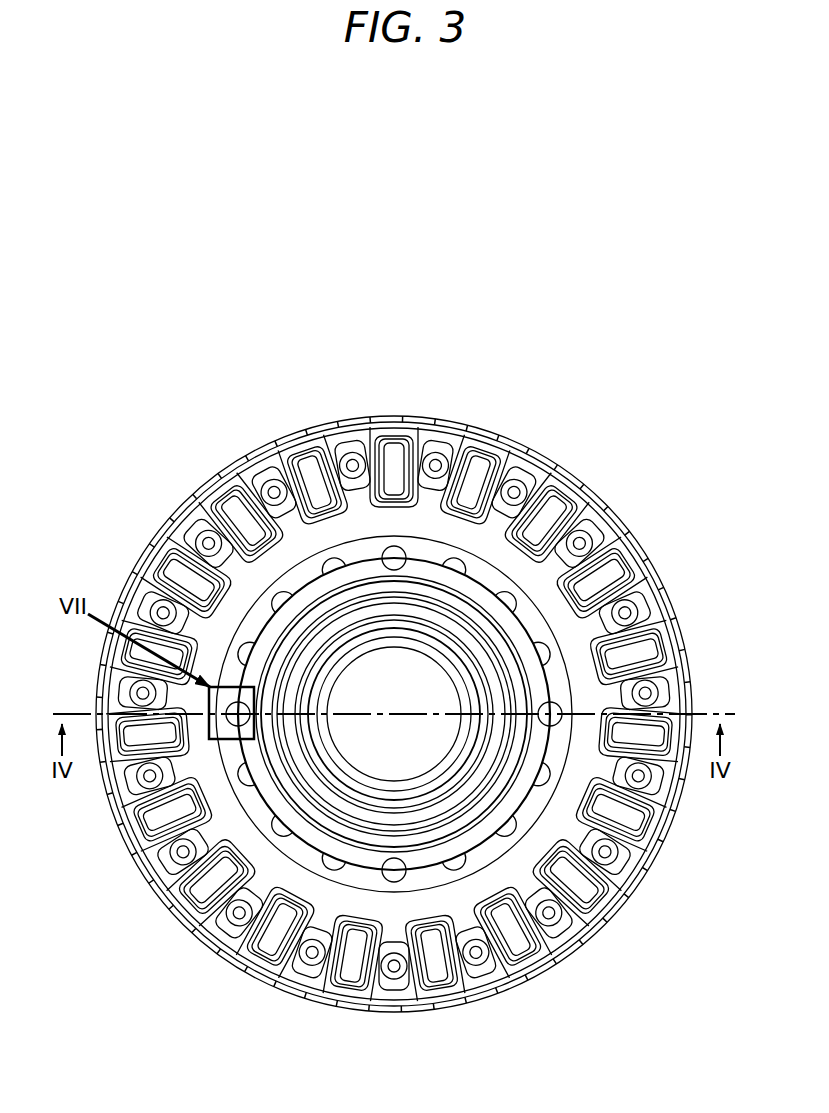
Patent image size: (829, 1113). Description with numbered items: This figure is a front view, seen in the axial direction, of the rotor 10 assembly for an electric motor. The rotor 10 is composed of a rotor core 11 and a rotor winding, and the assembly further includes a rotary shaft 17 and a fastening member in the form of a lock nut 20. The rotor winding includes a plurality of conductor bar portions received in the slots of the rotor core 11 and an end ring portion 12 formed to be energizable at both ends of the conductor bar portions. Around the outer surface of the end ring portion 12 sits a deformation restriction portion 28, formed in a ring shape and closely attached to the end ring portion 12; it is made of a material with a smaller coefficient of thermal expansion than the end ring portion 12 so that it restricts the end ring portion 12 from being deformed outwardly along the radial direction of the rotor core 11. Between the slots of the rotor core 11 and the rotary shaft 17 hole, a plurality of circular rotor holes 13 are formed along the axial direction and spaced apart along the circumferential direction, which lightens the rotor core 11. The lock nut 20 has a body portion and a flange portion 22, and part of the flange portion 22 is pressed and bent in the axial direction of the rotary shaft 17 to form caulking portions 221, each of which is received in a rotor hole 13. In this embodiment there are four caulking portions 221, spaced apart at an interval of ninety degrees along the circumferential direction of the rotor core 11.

The rotor 10 is at (272, 435).
The rotor core 11 is at (260, 617).
The end ring portion 12 is at (558, 615).
The rotor holes 13 is at (390, 553).
The rotary shaft 17 is at (350, 785).
The lock nut 20 is at (300, 610).
The flange portion 22 is at (520, 652).
The deformation restriction portion 28 is at (613, 510).
The caulking portion 221 is at (394, 560).